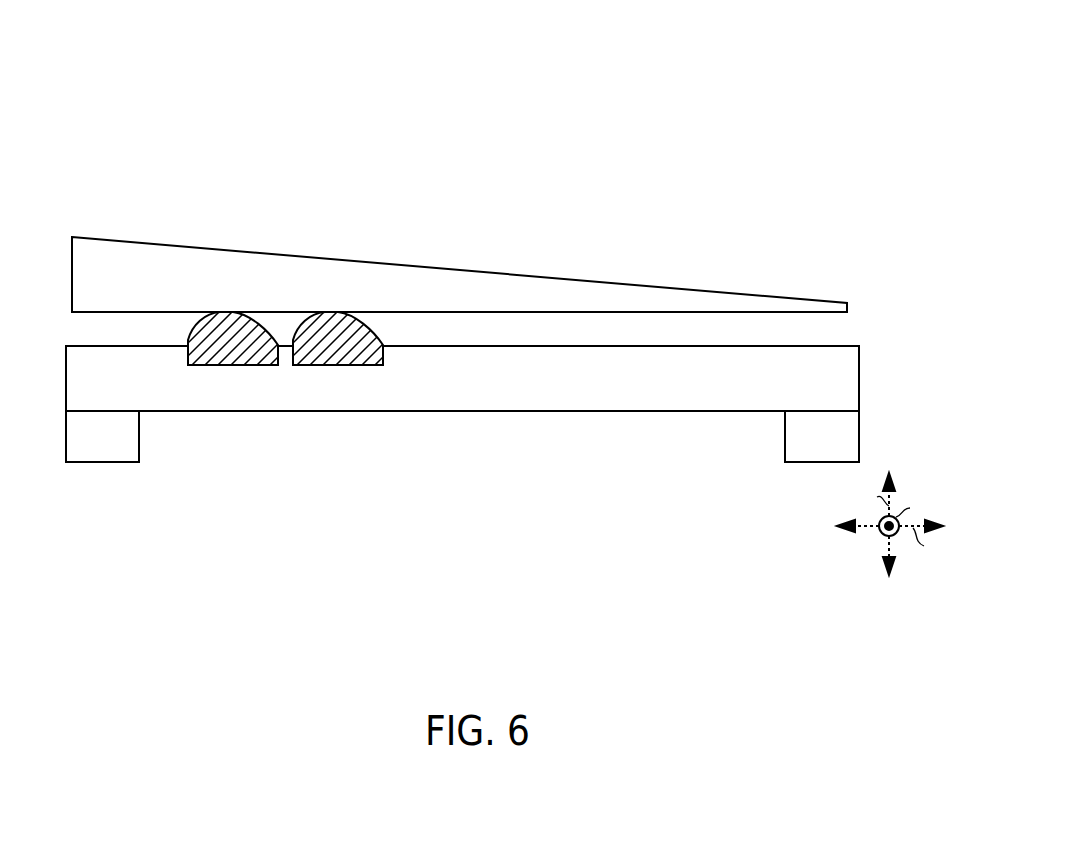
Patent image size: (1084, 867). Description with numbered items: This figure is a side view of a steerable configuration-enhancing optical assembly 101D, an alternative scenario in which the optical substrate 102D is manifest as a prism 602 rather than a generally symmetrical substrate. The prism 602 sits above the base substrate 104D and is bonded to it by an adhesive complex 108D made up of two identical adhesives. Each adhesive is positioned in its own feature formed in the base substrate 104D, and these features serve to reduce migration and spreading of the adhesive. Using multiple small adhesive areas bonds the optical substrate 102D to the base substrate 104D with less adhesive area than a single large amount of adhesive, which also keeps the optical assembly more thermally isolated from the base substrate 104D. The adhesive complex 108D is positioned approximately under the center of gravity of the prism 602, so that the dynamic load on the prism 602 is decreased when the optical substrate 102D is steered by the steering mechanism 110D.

The steerable configuration-enhancing optical assembly 101D is at (586, 97).
The optical substrate 102D is at (132, 238).
The prism 602 is at (525, 275).
The base substrate 104D is at (832, 393).
The steering mechanism 110D is at (781, 463).
The adhesive complex 108D is at (387, 477).